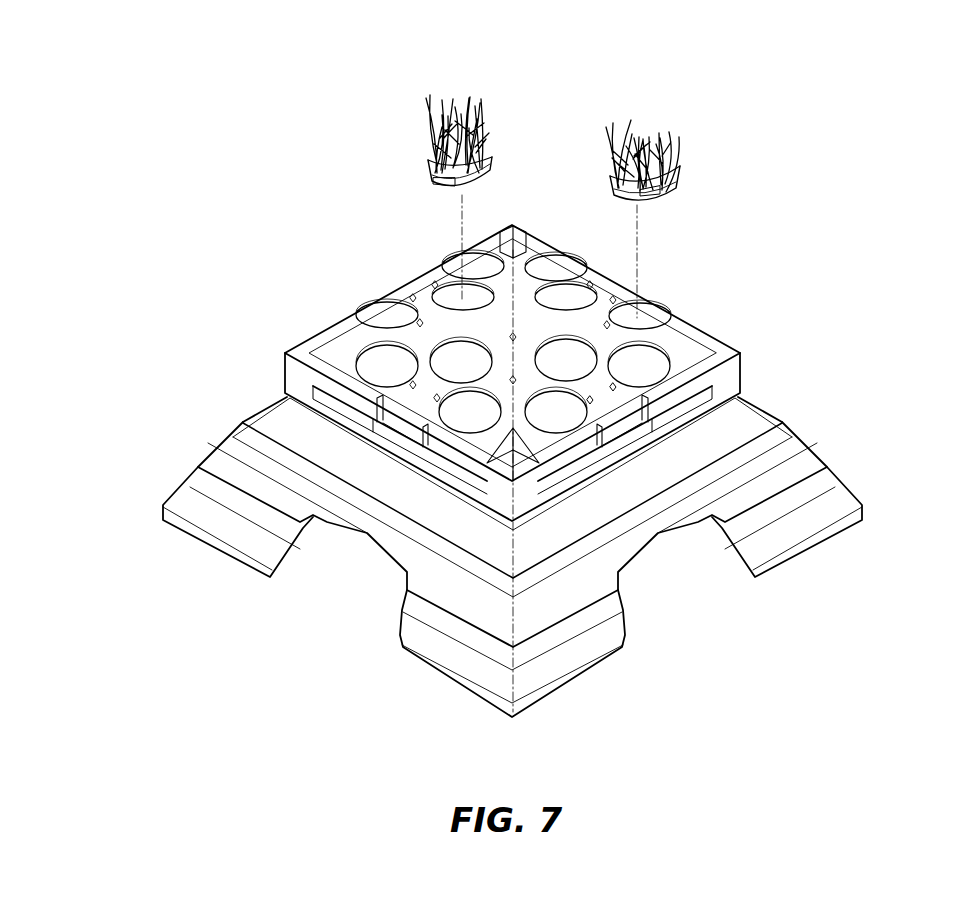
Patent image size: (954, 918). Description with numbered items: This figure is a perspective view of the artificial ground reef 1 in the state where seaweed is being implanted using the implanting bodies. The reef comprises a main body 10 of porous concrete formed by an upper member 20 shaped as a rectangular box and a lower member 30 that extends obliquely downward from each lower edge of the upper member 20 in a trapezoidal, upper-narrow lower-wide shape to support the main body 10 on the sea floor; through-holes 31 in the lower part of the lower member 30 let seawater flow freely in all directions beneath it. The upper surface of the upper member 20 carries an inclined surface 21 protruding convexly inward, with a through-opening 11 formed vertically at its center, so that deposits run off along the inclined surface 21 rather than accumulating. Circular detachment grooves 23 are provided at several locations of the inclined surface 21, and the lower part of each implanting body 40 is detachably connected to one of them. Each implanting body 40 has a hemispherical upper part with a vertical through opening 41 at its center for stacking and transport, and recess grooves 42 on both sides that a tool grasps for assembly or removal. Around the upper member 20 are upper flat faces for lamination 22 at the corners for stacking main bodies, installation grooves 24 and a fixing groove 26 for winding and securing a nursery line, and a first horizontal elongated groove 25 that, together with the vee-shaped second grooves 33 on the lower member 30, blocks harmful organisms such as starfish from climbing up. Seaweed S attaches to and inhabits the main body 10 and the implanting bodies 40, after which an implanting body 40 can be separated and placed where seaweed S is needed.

The artificial ground reef 1 is at (575, 138).
The main body 10 is at (748, 350).
The through-opening 11 is at (530, 303).
The upper member 20 is at (293, 376).
The inclined surface 21 is at (623, 300).
The upper flat face for lamination 22 is at (505, 460).
The detachment groove 23 is at (453, 302).
The installation groove 24 is at (427, 427).
The first horizontal elongated groove 25 is at (740, 393).
The fixing groove 26 is at (590, 398).
The lower member 30 is at (215, 452).
The through-hole 31 is at (385, 550).
The second groove 33 is at (287, 458).
The implanting body 40 is at (425, 158).
The vertical through opening 41 is at (448, 135).
The recess groove 42 is at (436, 178).
The seaweed S is at (428, 114).